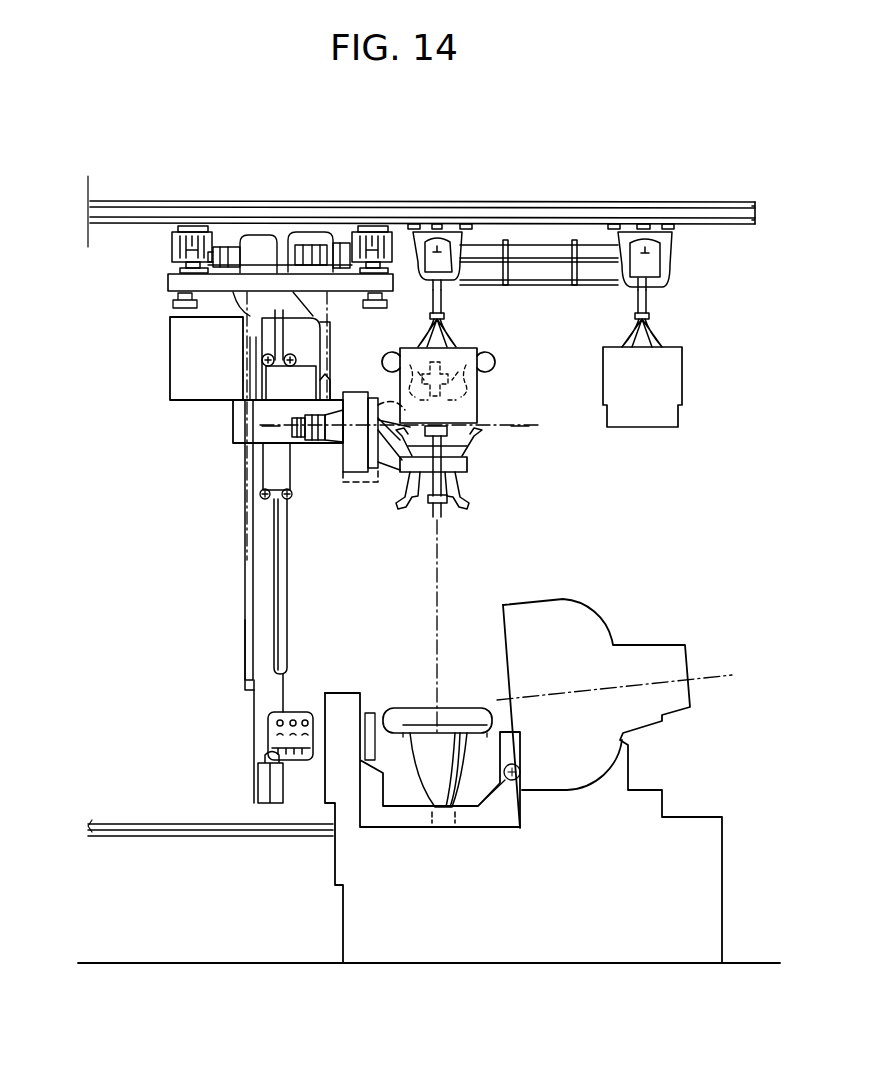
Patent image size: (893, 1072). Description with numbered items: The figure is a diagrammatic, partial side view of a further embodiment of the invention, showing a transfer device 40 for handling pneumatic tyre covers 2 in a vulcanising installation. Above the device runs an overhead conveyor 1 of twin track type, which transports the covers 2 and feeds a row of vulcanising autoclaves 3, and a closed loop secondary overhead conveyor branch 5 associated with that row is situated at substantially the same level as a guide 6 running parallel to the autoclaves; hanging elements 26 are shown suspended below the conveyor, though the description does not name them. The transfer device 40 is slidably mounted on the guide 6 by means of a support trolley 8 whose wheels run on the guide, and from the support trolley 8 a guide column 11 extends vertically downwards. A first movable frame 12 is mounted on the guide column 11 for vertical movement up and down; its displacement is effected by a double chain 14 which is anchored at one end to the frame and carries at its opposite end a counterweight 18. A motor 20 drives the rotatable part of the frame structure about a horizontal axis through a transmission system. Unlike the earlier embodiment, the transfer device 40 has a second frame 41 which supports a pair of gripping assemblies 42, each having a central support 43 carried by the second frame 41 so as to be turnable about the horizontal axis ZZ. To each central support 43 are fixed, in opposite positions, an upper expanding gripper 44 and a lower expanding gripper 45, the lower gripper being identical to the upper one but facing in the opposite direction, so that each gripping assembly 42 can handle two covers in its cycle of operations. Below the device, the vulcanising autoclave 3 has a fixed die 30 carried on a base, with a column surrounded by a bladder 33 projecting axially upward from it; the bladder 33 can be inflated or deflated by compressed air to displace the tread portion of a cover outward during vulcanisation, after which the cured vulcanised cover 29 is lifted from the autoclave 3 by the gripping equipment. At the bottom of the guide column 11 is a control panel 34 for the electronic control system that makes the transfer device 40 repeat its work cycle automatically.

The overhead conveyor 1 is at (655, 230).
The pneumatic tyre cover 2 is at (625, 370).
The vulcanising autoclave 3 is at (612, 598).
The secondary overhead conveyor branch 5 is at (542, 238).
The guide 6 is at (163, 216).
The support trolley 8 is at (182, 283).
The guide column 11 is at (262, 585).
The first movable frame 12 is at (270, 470).
The double chain 14 is at (262, 334).
The counterweight 18 is at (238, 688).
The motor 20 is at (303, 442).
The gripper 26 is at (461, 321).
The vulcanised cover 29 is at (463, 713).
The fixed die 30 is at (393, 693).
The bladder 33 is at (428, 775).
The control panel 34 is at (263, 749).
The transfer device 40 is at (222, 636).
The second frame 41 is at (248, 424).
The gripping assembly 42 is at (495, 476).
The central support 43 is at (467, 470).
The upper expanding gripper 44 is at (483, 443).
The lower expanding gripper 45 is at (455, 528).